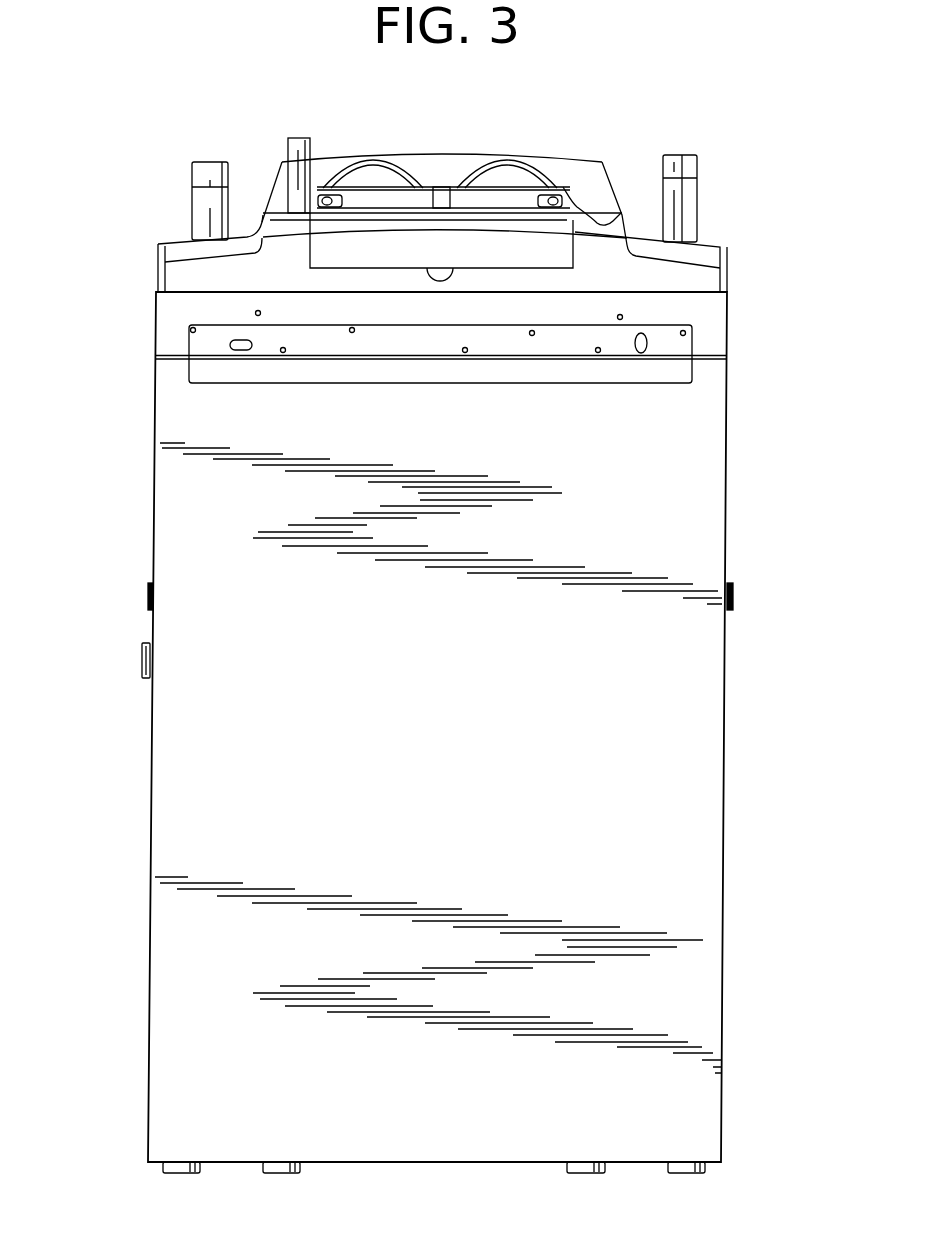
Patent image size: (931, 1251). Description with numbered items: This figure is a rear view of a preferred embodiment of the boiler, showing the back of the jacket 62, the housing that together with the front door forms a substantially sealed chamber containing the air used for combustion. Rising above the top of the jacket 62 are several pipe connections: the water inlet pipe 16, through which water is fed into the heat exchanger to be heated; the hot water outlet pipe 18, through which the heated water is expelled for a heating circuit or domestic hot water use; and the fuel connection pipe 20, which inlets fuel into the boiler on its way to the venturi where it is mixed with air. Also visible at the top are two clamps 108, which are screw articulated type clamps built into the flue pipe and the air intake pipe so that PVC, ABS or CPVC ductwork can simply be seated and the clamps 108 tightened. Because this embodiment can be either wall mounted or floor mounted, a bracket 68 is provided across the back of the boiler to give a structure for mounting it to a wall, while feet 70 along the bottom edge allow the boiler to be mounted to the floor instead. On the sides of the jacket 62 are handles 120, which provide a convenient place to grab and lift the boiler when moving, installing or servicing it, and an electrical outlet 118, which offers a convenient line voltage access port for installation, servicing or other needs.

The water inlet pipe 16 is at (697, 156).
The hot water outlet pipe 18 is at (198, 173).
The fuel connection pipe 20 is at (307, 139).
The jacket 62 is at (713, 873).
The bracket 68 is at (687, 345).
The feet 70 is at (172, 1174).
The clamp 108 is at (370, 200).
The electrical outlet 118 is at (141, 665).
The handles 120 is at (146, 600).